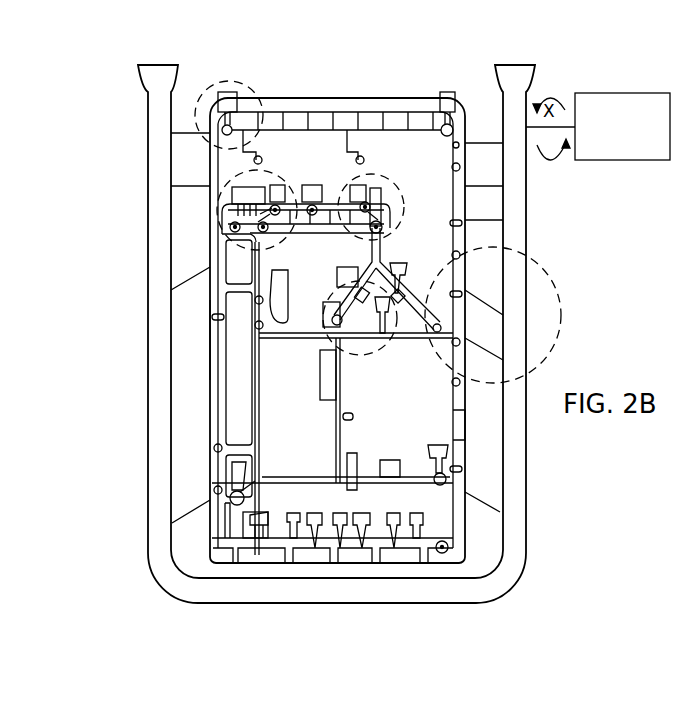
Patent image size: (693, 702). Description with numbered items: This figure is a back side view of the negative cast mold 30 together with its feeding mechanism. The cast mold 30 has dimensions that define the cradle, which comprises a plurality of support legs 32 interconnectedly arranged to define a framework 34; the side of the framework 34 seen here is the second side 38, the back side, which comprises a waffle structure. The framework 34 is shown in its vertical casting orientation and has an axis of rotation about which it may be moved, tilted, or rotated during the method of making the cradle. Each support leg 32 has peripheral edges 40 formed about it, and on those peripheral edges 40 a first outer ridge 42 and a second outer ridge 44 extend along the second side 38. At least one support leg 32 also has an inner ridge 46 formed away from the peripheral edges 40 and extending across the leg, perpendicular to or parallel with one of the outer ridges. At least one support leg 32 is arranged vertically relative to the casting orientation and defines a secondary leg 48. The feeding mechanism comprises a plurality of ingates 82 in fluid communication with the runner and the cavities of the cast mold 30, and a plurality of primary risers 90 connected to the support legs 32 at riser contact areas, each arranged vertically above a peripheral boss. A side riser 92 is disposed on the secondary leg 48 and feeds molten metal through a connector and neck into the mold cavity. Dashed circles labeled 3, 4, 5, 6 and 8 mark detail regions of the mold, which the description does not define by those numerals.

The detail region 3 is at (528, 274).
The detail region 4 is at (240, 85).
The detail region 5 is at (380, 177).
The detail region 6 is at (213, 235).
The detail region 8 is at (362, 290).
The negative cast mold 30 is at (218, 397).
The support leg 32 is at (420, 135).
The framework 34 is at (212, 340).
The second side 38 is at (157, 197).
The peripheral edges 40 is at (463, 423).
The first outer ridge 42 is at (330, 108).
The second outer ridge 44 is at (427, 130).
The inner ridge 46 is at (298, 222).
The secondary leg 48 is at (400, 312).
The ingate 82 is at (201, 179).
The primary riser 90 is at (230, 91).
The side riser 92 is at (335, 318).